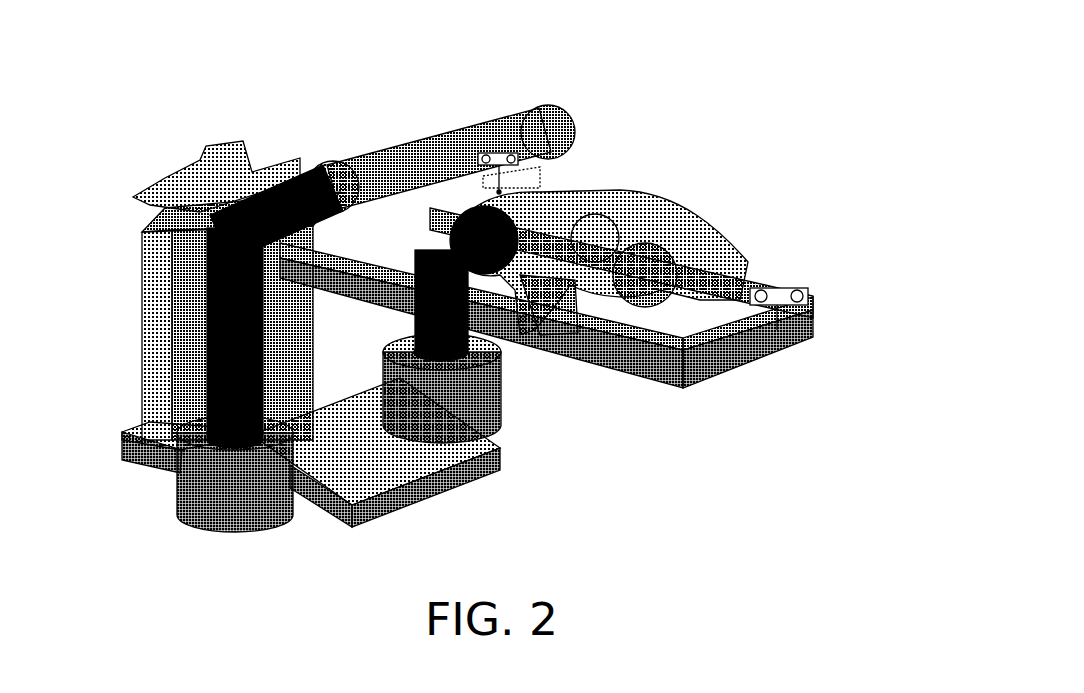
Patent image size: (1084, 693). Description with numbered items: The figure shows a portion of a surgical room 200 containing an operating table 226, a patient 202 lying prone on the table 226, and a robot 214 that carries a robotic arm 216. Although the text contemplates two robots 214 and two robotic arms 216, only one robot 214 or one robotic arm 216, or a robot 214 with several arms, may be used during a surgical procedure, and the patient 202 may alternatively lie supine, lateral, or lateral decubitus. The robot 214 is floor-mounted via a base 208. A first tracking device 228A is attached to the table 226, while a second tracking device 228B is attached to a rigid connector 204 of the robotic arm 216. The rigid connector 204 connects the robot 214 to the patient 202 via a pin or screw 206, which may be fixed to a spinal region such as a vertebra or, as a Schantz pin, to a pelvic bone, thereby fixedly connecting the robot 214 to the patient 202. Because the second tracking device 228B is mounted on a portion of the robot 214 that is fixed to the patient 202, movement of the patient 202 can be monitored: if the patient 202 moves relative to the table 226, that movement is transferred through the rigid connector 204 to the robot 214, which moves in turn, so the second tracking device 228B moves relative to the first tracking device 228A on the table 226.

The surgical room 200 is at (502, 266).
The patient 202 is at (697, 253).
The rigid connector 204 is at (547, 180).
The pin or screw 206 is at (487, 192).
The base 208 is at (183, 468).
The robot 214 is at (346, 282).
The robotic arm 216 is at (367, 167).
The operating table 226 is at (745, 357).
The first tracking device 228A is at (808, 297).
The second tracking device 228B is at (478, 153).